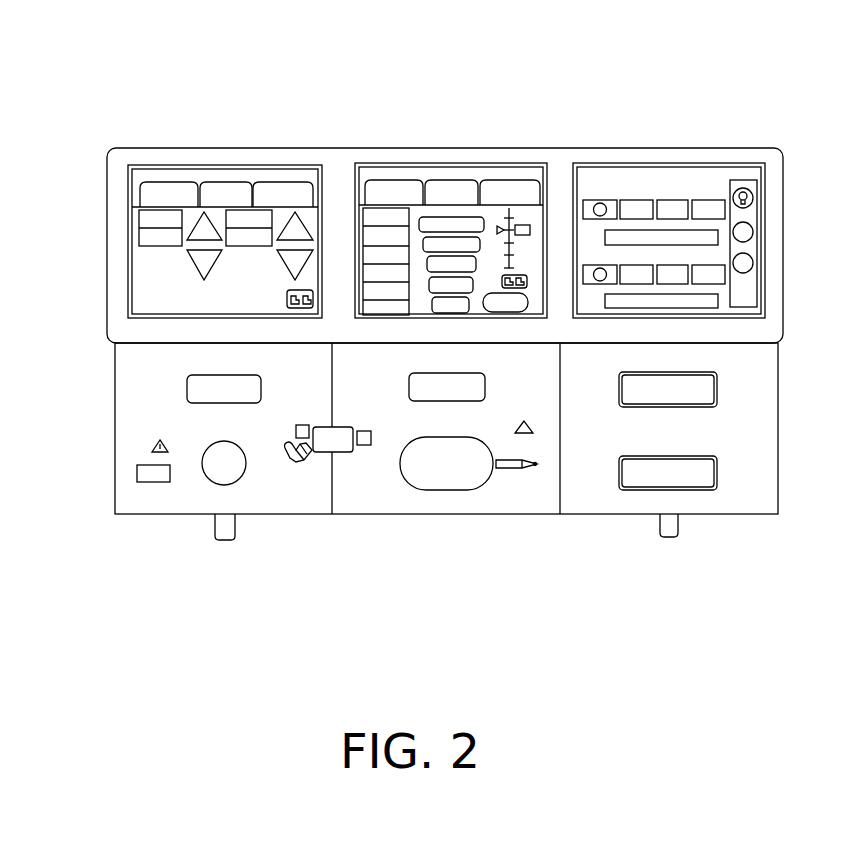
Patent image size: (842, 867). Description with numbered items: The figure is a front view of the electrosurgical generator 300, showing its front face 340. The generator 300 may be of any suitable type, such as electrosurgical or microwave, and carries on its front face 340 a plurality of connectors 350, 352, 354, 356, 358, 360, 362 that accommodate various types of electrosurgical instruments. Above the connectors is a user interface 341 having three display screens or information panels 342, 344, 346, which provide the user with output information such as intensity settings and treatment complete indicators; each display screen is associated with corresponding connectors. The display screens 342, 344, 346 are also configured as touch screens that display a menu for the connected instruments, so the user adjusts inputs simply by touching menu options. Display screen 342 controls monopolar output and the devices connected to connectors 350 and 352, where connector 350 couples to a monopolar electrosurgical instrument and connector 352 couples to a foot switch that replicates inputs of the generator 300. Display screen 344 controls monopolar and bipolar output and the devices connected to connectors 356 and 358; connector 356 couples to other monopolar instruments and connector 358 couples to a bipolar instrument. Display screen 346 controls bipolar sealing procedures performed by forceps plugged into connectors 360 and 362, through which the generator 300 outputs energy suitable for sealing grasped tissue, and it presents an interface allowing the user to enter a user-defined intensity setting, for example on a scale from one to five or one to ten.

The generator 300 is at (473, 291).
The front face 340 is at (343, 151).
The user interface 341 is at (445, 193).
The display screen 342 is at (262, 165).
The display screen 344 is at (452, 165).
The display screen 346 is at (680, 165).
The connector 350 is at (187, 390).
The connector 352 is at (240, 480).
The connector 354 is at (320, 425).
The connector 356 is at (409, 382).
The connector 358 is at (485, 485).
The connector 360 is at (685, 372).
The connector 362 is at (690, 456).